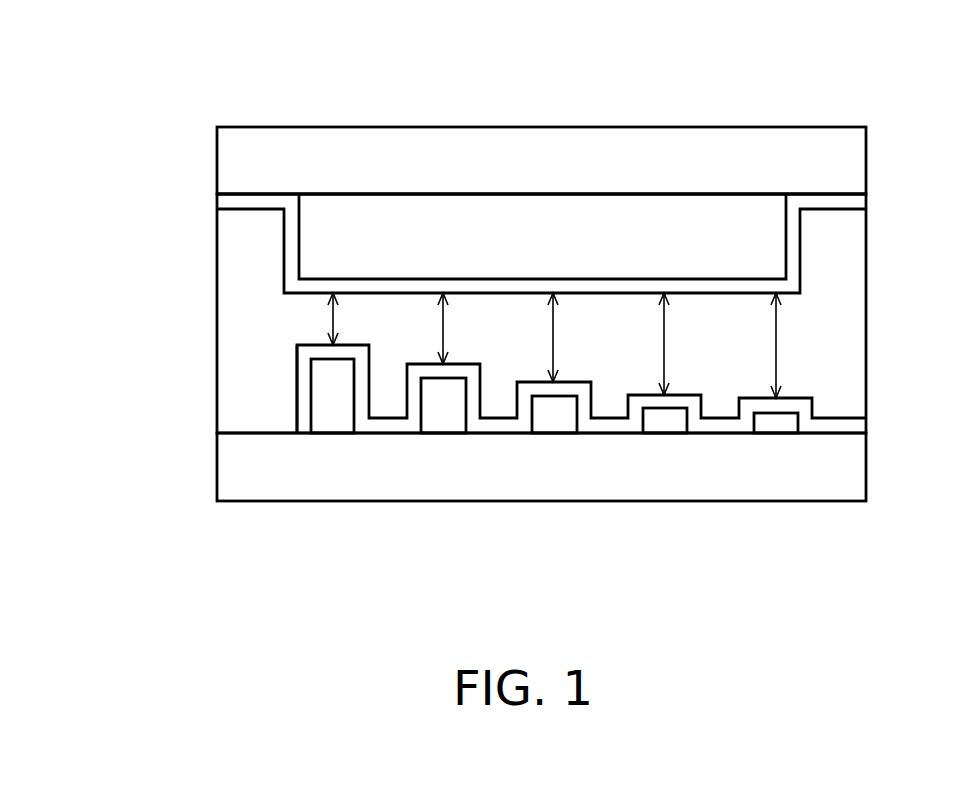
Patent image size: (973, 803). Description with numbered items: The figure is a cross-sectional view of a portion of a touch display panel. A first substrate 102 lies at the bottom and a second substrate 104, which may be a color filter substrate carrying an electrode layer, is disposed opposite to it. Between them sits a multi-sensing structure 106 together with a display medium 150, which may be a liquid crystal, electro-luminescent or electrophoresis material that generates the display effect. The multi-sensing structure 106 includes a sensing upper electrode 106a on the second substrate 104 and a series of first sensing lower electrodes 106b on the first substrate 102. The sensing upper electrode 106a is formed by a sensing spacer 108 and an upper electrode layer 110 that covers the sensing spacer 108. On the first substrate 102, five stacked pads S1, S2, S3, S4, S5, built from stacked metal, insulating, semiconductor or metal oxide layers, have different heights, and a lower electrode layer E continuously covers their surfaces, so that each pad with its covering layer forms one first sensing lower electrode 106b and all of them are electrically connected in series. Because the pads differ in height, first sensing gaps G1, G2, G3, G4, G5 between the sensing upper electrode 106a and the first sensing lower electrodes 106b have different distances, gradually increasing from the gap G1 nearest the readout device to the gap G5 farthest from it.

The first substrate 102 is at (848, 459).
The second substrate 104 is at (847, 161).
The multi-sensing structure 106 is at (104, 250).
The sensing upper electrode 106a is at (272, 250).
The first sensing lower electrodes 106b is at (272, 390).
The sensing spacer 108 is at (349, 225).
The upper electrode layer 110 is at (227, 202).
The display medium 150 is at (847, 277).
The lower electrode layer E is at (299, 413).
The stacked pad S1 is at (330, 423).
The stacked pad S2 is at (441, 423).
The stacked pad S3 is at (552, 422).
The stacked pad S4 is at (662, 422).
The stacked pad S5 is at (773, 422).
The first sensing gap G1 is at (347, 319).
The first sensing gap G2 is at (459, 328).
The first sensing gap G3 is at (570, 337).
The first sensing gap G4 is at (681, 344).
The first sensing gap G5 is at (793, 345).